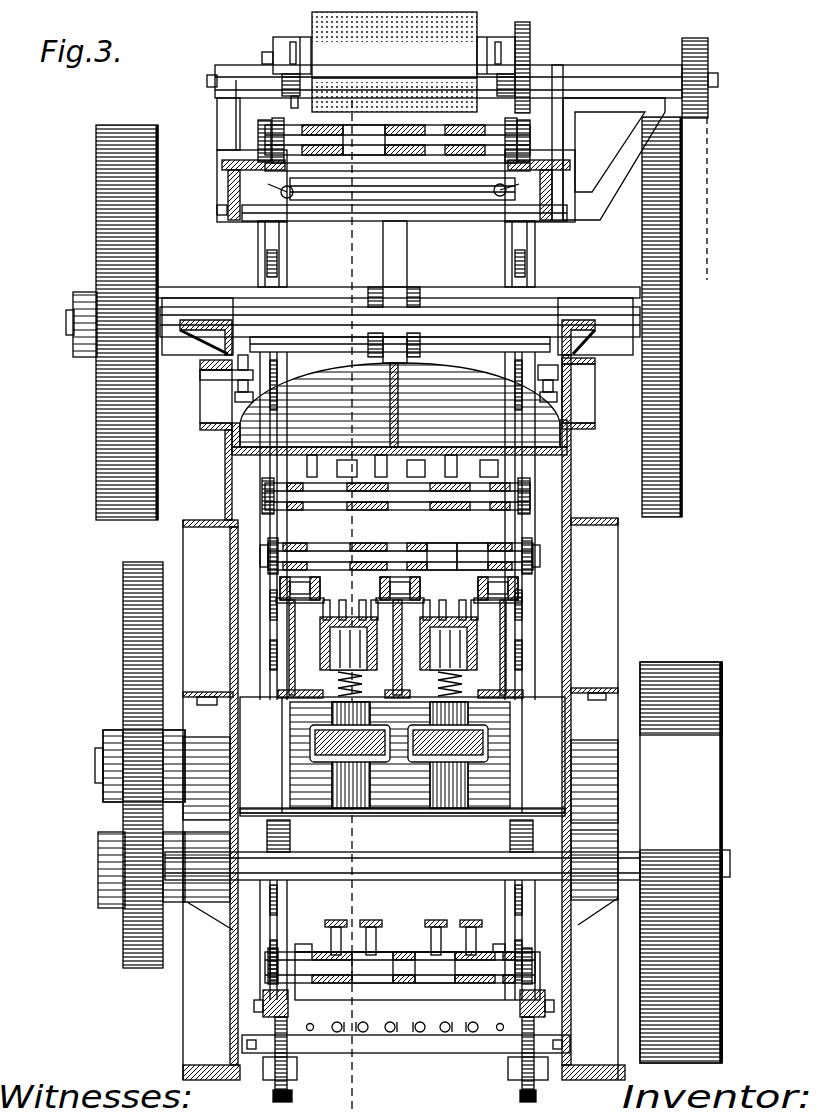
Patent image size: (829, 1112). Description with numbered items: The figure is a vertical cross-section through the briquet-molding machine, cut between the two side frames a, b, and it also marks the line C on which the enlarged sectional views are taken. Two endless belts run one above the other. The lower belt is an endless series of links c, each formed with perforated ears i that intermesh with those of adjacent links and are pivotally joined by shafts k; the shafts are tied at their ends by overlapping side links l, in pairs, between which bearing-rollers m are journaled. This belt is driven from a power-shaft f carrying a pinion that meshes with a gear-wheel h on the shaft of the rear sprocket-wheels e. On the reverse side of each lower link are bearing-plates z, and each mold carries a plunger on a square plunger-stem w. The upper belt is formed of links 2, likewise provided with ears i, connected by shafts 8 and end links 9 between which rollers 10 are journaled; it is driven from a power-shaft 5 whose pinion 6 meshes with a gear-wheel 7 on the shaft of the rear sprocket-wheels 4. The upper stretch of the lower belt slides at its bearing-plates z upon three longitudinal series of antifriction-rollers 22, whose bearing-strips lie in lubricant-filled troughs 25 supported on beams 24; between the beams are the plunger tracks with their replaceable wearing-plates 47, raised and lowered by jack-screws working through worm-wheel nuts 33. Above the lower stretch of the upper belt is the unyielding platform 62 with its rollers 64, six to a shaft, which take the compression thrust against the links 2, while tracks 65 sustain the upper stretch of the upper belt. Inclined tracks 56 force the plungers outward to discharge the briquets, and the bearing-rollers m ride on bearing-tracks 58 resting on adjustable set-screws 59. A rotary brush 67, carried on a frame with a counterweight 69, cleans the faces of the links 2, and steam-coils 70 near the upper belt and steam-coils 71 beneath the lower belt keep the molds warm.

The section line C is at (240, 27).
The links 2 is at (368, 156).
The rear sprocket-wheels 4 is at (266, 240).
The power-shaft 5 is at (440, 312).
The pinion 6 is at (660, 292).
The gear-wheel 7 is at (660, 430).
The shafts 8 is at (460, 142).
The end links 9 is at (262, 130).
The rollers 10 is at (276, 124).
The antifriction-rollers 22 is at (370, 548).
The beams 24 is at (290, 700).
The troughs 25 is at (280, 588).
The worm-wheel nuts 33 is at (318, 742).
The wearing-plates 47 is at (345, 640).
The inclined frames or tracks 56 is at (368, 922).
The bearing-tracks 58 is at (268, 1003).
The set-screws 59 is at (293, 1097).
The platform 62 is at (399, 409).
The rollers 64 is at (380, 460).
The tracks 65 is at (240, 186).
The rotary brush 67 is at (394, 62).
The counterweight 69 is at (284, 52).
The steam-coils 70 is at (292, 198).
The steam-coils 71 is at (446, 1032).
The side frame a is at (226, 482).
The side frame b is at (570, 476).
The links c is at (470, 562).
The rear sprocket-wheels e is at (292, 830).
The power-shaft f is at (428, 862).
The gear-wheel h is at (128, 676).
The perforated ears i is at (372, 150).
The shafts k is at (432, 548).
The side links l is at (262, 556).
The bearing-rollers m is at (270, 546).
The plunger-stem w is at (400, 597).
The bearing-plates z is at (400, 940).